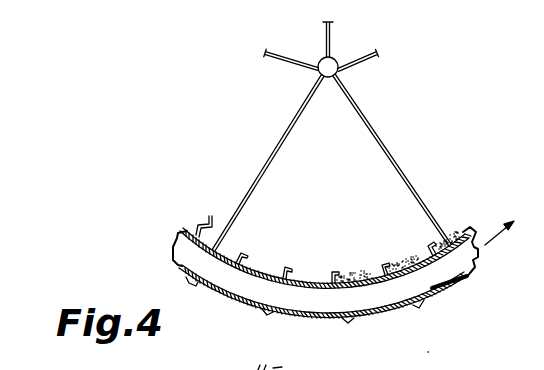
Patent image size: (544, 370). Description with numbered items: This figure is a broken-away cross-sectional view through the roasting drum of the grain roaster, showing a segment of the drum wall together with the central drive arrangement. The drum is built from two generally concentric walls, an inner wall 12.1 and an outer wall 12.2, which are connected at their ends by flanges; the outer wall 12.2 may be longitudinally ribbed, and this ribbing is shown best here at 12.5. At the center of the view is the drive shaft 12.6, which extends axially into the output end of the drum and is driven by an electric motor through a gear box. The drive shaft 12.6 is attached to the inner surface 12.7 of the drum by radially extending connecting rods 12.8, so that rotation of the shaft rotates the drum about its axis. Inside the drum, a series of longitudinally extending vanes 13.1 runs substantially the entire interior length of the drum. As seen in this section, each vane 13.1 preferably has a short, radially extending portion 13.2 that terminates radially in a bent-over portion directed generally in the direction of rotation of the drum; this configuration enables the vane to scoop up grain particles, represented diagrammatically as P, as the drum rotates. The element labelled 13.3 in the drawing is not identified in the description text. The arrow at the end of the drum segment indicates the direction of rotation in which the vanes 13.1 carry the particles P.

The drive shaft 12.6 is at (331, 62).
The connecting rods 12.8 is at (363, 115).
The inner surface 12.7 is at (270, 272).
The outer wall 12.2 is at (383, 313).
The longitudinal ribs 12.5 is at (345, 323).
The radially extending portion 13.2 is at (198, 223).
The inner wall 12.1 is at (463, 230).
The hook 13.3 is at (210, 216).
The vanes 13.1 is at (383, 259).
The particles P is at (423, 242).